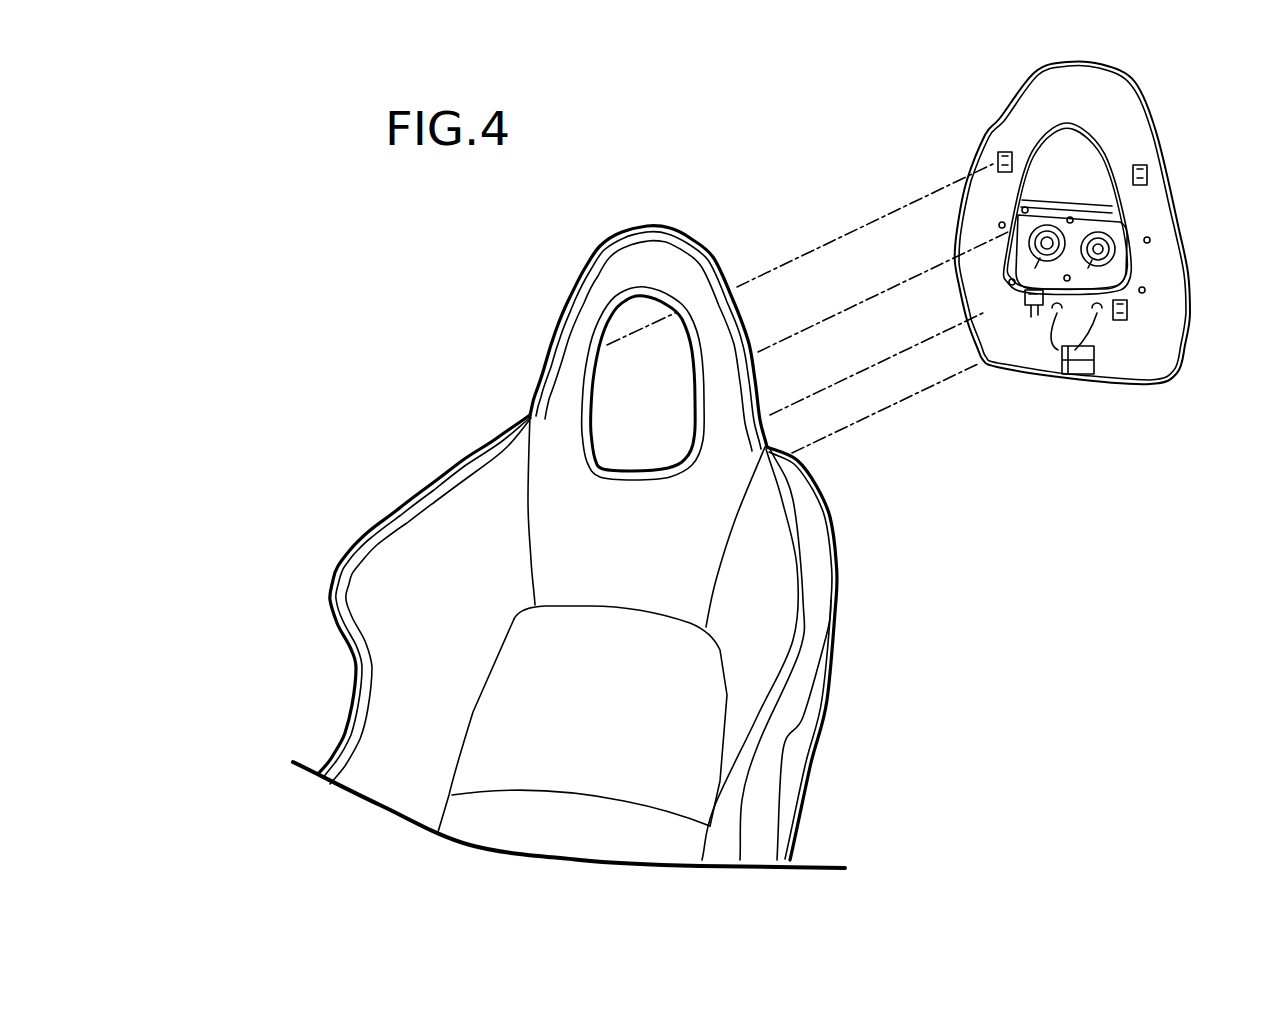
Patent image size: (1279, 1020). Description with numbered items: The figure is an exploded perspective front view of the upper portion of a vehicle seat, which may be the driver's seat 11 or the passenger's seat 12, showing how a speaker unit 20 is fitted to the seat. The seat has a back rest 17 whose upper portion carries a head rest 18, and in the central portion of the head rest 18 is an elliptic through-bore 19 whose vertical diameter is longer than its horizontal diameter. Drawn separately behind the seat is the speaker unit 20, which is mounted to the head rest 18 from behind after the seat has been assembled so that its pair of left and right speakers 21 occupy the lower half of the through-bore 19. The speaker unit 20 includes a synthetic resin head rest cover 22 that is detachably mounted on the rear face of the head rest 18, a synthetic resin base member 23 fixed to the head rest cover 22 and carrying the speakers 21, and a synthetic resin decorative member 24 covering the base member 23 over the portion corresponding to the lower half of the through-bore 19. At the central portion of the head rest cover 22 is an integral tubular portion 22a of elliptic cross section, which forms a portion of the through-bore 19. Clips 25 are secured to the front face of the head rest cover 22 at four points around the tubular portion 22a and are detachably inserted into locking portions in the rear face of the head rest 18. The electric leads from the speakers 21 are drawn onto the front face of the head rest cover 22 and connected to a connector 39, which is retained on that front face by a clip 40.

The driver's seat 11 is at (622, 521).
The passenger's seat 12 is at (556, 521).
The back rest 17 is at (507, 721).
The head rest 18 is at (650, 252).
The through-bore 19 is at (605, 370).
The speaker unit 20 is at (1067, 231).
The speakers 21 is at (1103, 252).
The head rest cover 22 is at (1110, 95).
The tubular portion 22a is at (1070, 122).
The base member 23 is at (1057, 197).
The decorative member 24 is at (1013, 222).
The clips 25 is at (1003, 160).
The connector 39 is at (1082, 371).
The clip 40 is at (1063, 373).